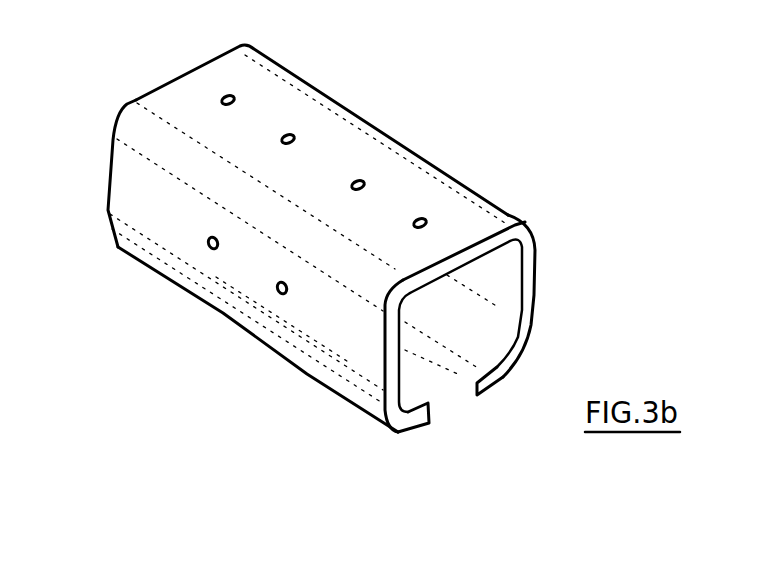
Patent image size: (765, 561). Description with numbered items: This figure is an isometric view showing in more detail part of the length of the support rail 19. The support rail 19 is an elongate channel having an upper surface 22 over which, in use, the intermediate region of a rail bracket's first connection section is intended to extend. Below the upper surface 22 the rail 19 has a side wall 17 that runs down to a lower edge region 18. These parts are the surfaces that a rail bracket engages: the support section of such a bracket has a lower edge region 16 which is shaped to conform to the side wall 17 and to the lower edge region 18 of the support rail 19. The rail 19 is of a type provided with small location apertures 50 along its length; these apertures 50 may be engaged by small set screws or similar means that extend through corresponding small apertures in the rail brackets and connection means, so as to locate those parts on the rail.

The lower edge region 16 is at (317, 333).
The side wall 17 is at (350, 385).
The lower edge region 18 is at (423, 427).
The support rail 19 is at (540, 118).
The upper surface 22 is at (347, 154).
The location apertures 50 is at (237, 97).